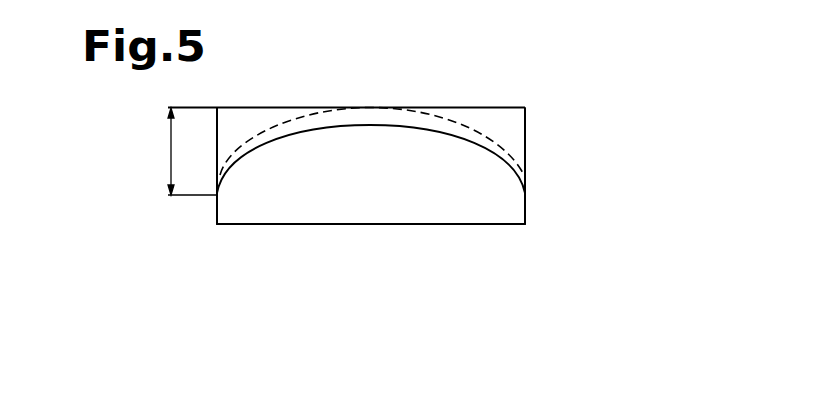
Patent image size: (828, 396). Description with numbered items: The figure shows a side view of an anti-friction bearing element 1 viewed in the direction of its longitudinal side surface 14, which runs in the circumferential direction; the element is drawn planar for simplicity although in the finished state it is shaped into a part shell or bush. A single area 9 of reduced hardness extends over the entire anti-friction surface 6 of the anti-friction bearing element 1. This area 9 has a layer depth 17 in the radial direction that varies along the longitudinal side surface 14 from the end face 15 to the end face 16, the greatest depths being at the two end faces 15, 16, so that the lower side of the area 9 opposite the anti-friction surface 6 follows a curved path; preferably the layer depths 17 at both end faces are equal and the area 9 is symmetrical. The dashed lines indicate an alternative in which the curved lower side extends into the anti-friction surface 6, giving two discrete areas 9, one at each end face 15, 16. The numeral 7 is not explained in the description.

The anti-friction bearing element 1 is at (488, 243).
The anti-friction surface 6 is at (303, 108).
The upper surface 7 is at (371, 171).
The area of reduced hardness 9 is at (519, 122).
The longitudinal side surface 14 is at (320, 214).
The end face 15 is at (526, 210).
The end face 16 is at (216, 209).
The layer depth 17 is at (169, 151).